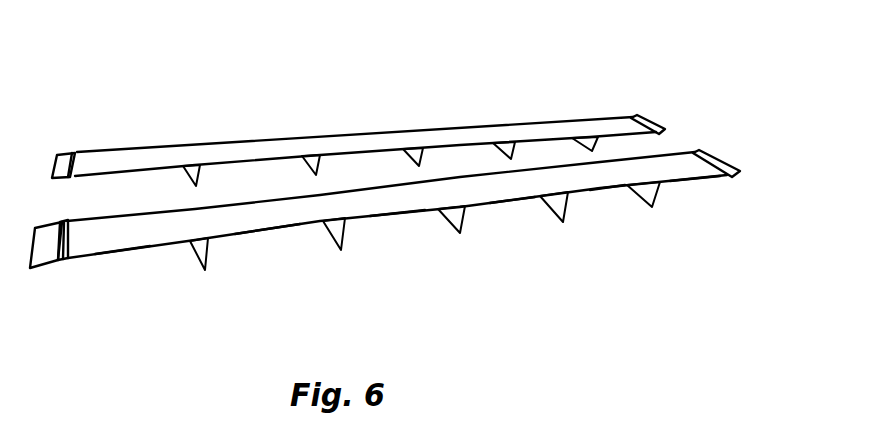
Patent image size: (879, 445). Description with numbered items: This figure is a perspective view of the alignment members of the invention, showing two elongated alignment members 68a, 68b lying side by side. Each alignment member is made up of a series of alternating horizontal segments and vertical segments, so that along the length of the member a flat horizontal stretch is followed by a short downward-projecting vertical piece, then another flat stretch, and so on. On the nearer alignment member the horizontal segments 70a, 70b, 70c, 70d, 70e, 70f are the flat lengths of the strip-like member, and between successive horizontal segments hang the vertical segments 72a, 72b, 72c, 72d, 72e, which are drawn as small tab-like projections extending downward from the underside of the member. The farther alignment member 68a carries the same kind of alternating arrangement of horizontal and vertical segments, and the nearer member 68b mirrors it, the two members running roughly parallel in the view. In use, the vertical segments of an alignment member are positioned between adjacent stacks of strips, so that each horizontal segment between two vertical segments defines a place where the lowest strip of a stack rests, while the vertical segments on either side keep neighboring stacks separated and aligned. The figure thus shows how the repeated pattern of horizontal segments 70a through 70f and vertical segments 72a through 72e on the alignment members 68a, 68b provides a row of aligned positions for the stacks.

The alignment member 68a is at (239, 107).
The alignment member 68b is at (502, 254).
The horizontal segment 70a is at (117, 253).
The horizontal segment 70b is at (272, 229).
The horizontal segment 70c is at (400, 213).
The horizontal segment 70d is at (515, 200).
The horizontal segment 70e is at (618, 187).
The horizontal segment 70f is at (690, 180).
The vertical segment 72a is at (207, 268).
The vertical segment 72b is at (341, 250).
The vertical segment 72c is at (460, 233).
The vertical segment 72d is at (563, 222).
The vertical segment 72e is at (652, 207).